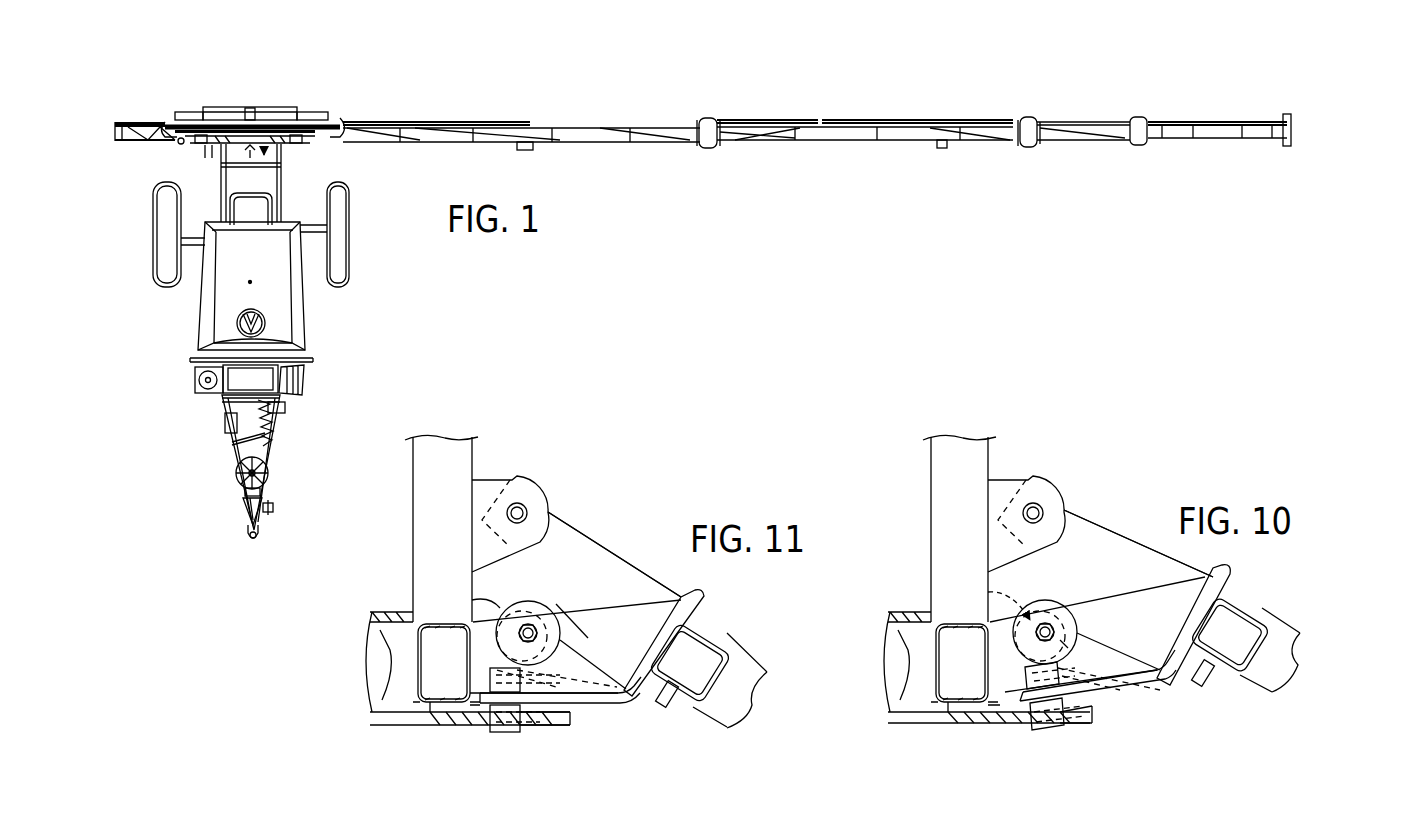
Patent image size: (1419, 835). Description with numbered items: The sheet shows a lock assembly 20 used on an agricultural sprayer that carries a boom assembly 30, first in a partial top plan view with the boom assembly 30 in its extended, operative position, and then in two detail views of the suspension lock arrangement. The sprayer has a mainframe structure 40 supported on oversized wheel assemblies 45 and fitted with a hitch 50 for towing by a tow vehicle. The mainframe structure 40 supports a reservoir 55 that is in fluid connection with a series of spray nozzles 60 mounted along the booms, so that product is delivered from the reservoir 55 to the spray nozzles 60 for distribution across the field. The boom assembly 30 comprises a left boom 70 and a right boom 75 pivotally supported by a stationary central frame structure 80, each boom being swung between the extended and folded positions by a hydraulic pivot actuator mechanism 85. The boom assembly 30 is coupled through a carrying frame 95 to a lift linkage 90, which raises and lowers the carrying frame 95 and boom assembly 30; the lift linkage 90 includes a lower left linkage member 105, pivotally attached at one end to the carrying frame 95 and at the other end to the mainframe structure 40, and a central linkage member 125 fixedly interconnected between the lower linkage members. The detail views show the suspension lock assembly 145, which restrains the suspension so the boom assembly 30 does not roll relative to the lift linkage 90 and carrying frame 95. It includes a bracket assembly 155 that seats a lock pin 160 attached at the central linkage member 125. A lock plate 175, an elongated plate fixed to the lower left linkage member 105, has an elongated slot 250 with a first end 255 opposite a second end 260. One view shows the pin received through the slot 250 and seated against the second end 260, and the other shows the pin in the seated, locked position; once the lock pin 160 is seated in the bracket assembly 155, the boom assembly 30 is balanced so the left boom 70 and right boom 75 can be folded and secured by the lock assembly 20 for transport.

In FIG. 1, the boom assembly 30 is at (478, 52).
In FIG. 1, the right boom 75 is at (137, 92).
In FIG. 1, the pivot actuator mechanism 85 is at (318, 100).
In FIG. 1, the stationary central frame structure 80 is at (182, 147).
In FIG. 1, the carrying frame 95 is at (203, 151).
In FIG. 11, the carrying frame 95 is at (478, 460).
In FIG. 10, the carrying frame 95 is at (996, 458).
In FIG. 1, the lock assembly 20 is at (292, 150).
In FIG. 1, the lift linkage 90 is at (295, 186).
In FIG. 11, the lift linkage 90 is at (655, 522).
In FIG. 10, the lift linkage 90 is at (1290, 588).
In FIG. 1, the reservoir 55 is at (315, 323).
In FIG. 1, the wheel assemblies 45 is at (353, 267).
In FIG. 1, the mainframe structure 40 is at (222, 433).
In FIG. 1, the hitch 50 is at (268, 533).
In FIG. 1, the left boom 70 is at (775, 100).
In FIG. 1, the spray nozzles 60 is at (1283, 110).
In FIG. 11, the suspension lock assembly 145 is at (475, 736).
In FIG. 10, the suspension lock assembly 145 is at (1015, 740).
In FIG. 11, the lower left linkage member 105 is at (577, 524).
In FIG. 10, the lower left linkage member 105 is at (1100, 515).
In FIG. 11, the central linkage member 125 is at (718, 693).
In FIG. 10, the central linkage member 125 is at (1262, 660).
In FIG. 11, the lock plate 175 is at (645, 700).
In FIG. 10, the lock plate 175 is at (1192, 682).
In FIG. 11, the bracket assembly 155 is at (573, 740).
In FIG. 10, the bracket assembly 155 is at (1105, 715).
In FIG. 11, the lock pin 160 is at (510, 732).
In FIG. 10, the lock pin 160 is at (1046, 732).
In FIG. 11, the elongated slot 250 is at (520, 620).
In FIG. 10, the elongated slot 250 is at (1055, 615).
In FIG. 11, the first end 255 is at (570, 600).
In FIG. 10, the first end 255 is at (988, 592).
In FIG. 11, the second end 260 is at (470, 602).
In FIG. 10, the second end 260 is at (1082, 627).